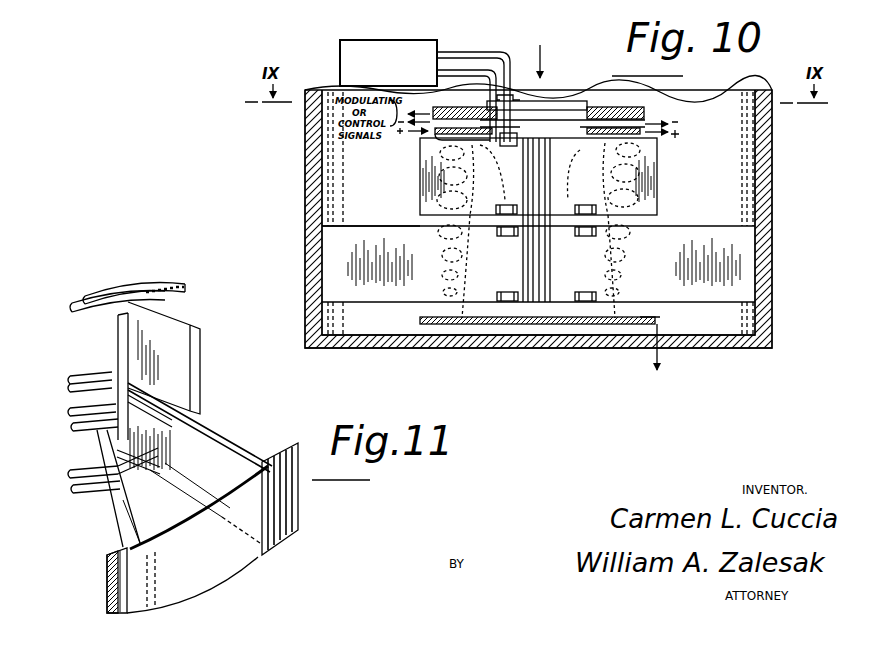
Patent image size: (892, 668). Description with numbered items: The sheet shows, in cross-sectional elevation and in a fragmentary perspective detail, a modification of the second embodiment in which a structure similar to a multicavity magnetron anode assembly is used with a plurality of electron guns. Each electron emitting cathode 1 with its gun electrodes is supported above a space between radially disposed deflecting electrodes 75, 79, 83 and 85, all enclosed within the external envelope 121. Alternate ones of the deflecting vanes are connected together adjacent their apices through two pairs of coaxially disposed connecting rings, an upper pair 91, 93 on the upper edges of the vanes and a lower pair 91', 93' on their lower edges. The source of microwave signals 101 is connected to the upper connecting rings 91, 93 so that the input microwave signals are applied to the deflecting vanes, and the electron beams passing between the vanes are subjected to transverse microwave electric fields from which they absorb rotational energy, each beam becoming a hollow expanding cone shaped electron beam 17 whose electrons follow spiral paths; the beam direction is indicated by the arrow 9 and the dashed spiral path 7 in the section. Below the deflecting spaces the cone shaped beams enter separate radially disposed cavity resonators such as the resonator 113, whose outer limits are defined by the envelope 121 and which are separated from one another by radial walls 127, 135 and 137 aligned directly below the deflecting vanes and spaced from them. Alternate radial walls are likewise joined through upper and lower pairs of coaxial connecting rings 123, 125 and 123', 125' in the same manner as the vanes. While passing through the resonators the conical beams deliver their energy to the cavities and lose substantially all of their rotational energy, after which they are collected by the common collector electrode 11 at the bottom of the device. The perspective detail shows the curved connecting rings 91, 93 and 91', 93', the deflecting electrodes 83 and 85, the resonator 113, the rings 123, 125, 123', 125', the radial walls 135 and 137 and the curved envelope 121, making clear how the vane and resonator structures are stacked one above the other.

In FIG. 10, the electron emitting cathode 1 is at (452, 108).
In FIG. 10, the helix coil 7 is at (485, 140).
In FIG. 10, the beam direction arrow 9 is at (541, 56).
In FIG. 10, the common collector electrode 11 is at (645, 317).
In FIG. 10, the cone shaped electron beam 17 is at (544, 220).
In FIG. 10, the radially disposed deflecting electrode 75 is at (418, 172).
In FIG. 10, the radially disposed deflecting electrode 79 is at (536, 138).
In FIG. 10, the radially disposed deflecting electrode 83 is at (657, 180).
In FIG. 11, the radially disposed deflecting electrode 83 is at (201, 362).
In FIG. 11, the radially disposed deflecting electrode 85 is at (132, 362).
In FIG. 10, the upper connecting ring 91 is at (527, 172).
In FIG. 11, the upper connecting ring 91 is at (127, 282).
In FIG. 10, the lower connecting ring 91' is at (541, 175).
In FIG. 11, the lower connecting ring 91' is at (89, 368).
In FIG. 10, the upper connecting ring 93 is at (543, 184).
In FIG. 11, the upper connecting ring 93 is at (180, 278).
In FIG. 10, the lower connecting ring 93' is at (536, 198).
In FIG. 11, the lower connecting ring 93' is at (93, 390).
In FIG. 10, the source of microwave signals 101 is at (381, 40).
In FIG. 11, the radially-disposed cavity resonator 113 is at (203, 485).
In FIG. 10, the external envelope 121 is at (305, 226).
In FIG. 11, the external envelope 121 is at (300, 490).
In FIG. 10, the upper coaxial connecting ring 123 is at (534, 266).
In FIG. 11, the upper coaxial connecting ring 123 is at (118, 450).
In FIG. 10, the lower coaxial connecting ring 123' is at (536, 291).
In FIG. 11, the lower coaxial connecting ring 123' is at (95, 509).
In FIG. 10, the upper coaxial connecting ring 125 is at (544, 245).
In FIG. 11, the upper coaxial connecting ring 125 is at (138, 407).
In FIG. 10, the lower coaxial connecting ring 125' is at (545, 286).
In FIG. 11, the lower coaxial connecting ring 125' is at (113, 482).
In FIG. 10, the radial wall 127 is at (398, 226).
In FIG. 10, the radial wall 135 is at (668, 227).
In FIG. 11, the radial wall 135 is at (236, 442).
In FIG. 11, the radial wall 137 is at (135, 509).